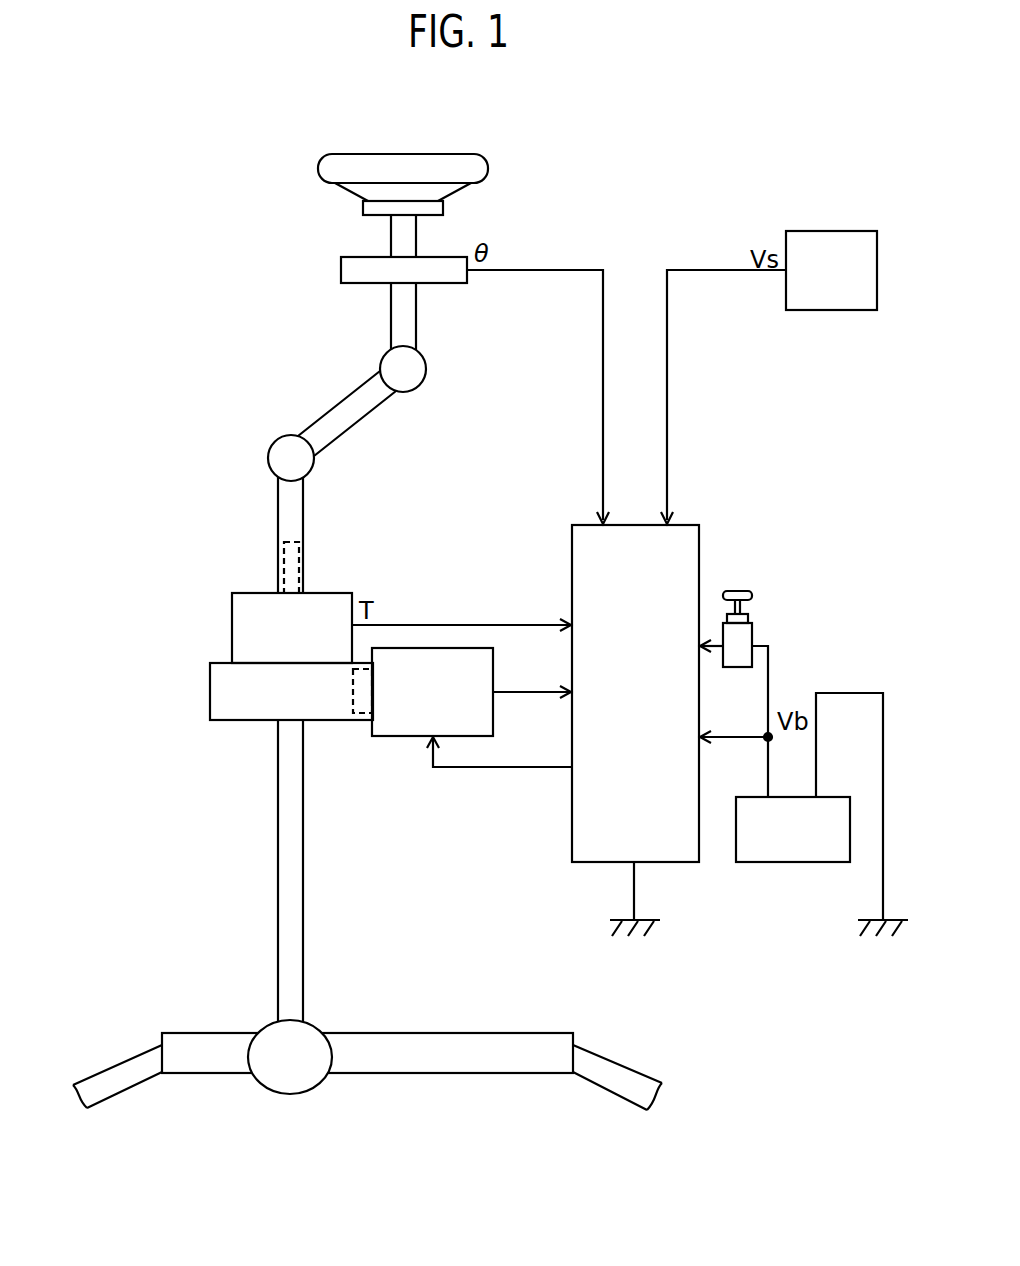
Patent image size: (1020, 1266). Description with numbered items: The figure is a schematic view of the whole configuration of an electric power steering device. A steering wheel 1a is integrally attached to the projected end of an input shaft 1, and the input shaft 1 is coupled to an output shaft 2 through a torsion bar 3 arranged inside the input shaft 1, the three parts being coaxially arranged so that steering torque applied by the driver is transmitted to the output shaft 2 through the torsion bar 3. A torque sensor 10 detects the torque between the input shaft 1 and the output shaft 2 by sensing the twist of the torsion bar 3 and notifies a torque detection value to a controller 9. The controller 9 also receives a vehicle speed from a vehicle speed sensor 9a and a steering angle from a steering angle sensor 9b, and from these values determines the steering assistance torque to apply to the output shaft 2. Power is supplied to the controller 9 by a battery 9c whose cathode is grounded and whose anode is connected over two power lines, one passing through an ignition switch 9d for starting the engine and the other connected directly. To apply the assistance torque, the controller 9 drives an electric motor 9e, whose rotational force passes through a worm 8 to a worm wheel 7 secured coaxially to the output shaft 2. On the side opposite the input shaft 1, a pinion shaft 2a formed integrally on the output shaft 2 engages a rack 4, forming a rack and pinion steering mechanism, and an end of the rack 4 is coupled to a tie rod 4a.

The steering wheel 1a is at (451, 154).
The input shaft 1 is at (278, 514).
The torsion bar 3 is at (286, 574).
The steering angle sensor 9b is at (341, 268).
The vehicle speed sensor 9a is at (852, 231).
The torque sensor 10 is at (232, 617).
The worm wheel 7 is at (210, 695).
The electric motor 9e is at (493, 668).
The worm 8 is at (364, 714).
The controller 9 is at (699, 548).
The ignition switch 9d is at (752, 631).
The battery 9c is at (757, 862).
The output shaft 2 is at (278, 818).
The pinion shaft 2a is at (318, 1025).
The rack 4 is at (492, 1033).
The tie rod 4a is at (115, 1060).